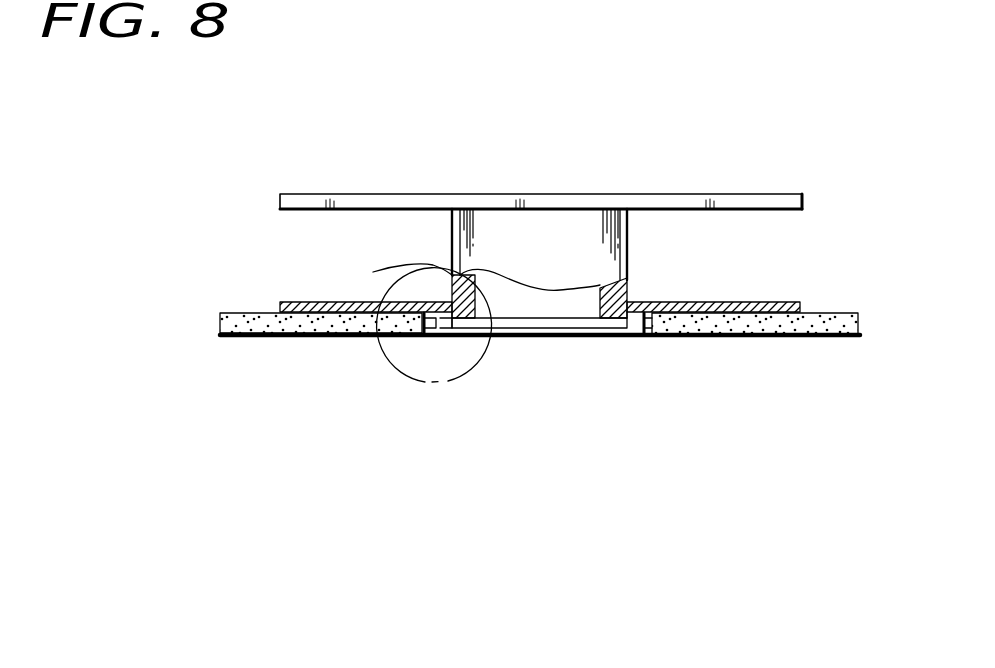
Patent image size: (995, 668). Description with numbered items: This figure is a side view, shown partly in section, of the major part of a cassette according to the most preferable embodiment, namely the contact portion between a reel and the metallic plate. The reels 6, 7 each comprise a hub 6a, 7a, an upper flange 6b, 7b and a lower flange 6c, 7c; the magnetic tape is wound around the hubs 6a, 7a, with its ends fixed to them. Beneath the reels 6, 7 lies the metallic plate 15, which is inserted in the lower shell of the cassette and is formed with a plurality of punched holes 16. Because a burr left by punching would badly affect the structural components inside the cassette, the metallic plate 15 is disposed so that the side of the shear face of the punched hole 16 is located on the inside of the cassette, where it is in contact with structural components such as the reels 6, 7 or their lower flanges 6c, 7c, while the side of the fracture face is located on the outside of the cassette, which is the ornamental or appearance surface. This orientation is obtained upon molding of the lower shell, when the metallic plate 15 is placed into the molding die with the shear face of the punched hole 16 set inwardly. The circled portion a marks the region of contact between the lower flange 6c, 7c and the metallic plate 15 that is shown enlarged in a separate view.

The reel 6 is at (541, 168).
The reel 7 is at (548, 195).
The hub 6a is at (492, 213).
The hub 7a is at (502, 240).
The upper flange 6b is at (720, 144).
The upper flange 7b is at (716, 201).
The lower flange 6c is at (586, 263).
The lower flange 7c is at (730, 303).
The metallic plate 15 is at (760, 337).
The punched hole 16 is at (638, 338).
The portion a is at (388, 367).